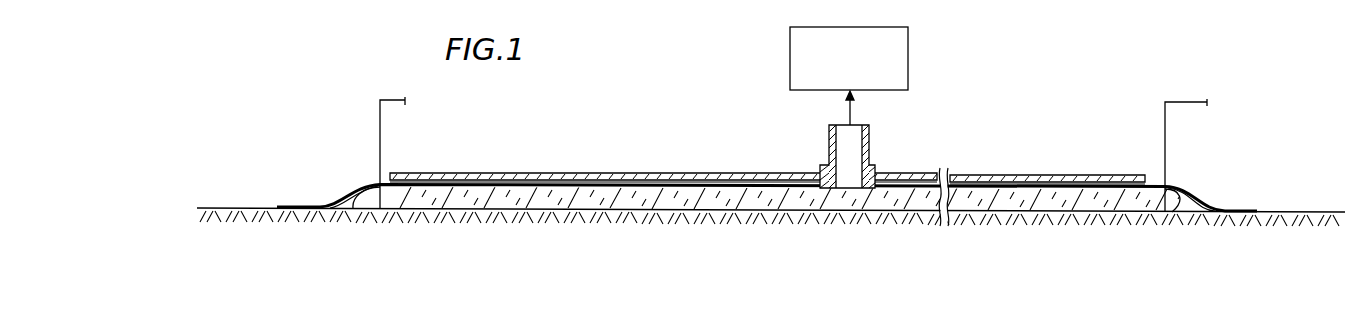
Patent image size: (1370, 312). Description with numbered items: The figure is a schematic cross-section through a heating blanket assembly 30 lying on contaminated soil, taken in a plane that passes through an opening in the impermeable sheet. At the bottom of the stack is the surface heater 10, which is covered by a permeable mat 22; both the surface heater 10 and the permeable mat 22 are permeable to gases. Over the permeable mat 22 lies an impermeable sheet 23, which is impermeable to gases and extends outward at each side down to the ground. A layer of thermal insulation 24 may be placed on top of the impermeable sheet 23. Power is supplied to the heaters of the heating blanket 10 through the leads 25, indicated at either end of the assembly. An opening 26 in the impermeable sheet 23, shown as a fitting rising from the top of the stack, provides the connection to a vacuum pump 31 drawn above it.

The surface heater 10 is at (511, 205).
The permeable mat 22 is at (1112, 193).
The impermeable sheet 23 is at (1058, 176).
The layer of thermal insulation 24 is at (985, 174).
The leads 25 is at (379, 126).
The opening 26 is at (869, 138).
The heating blanket assembly 30 is at (1024, 109).
The vacuum pump 31 is at (790, 61).